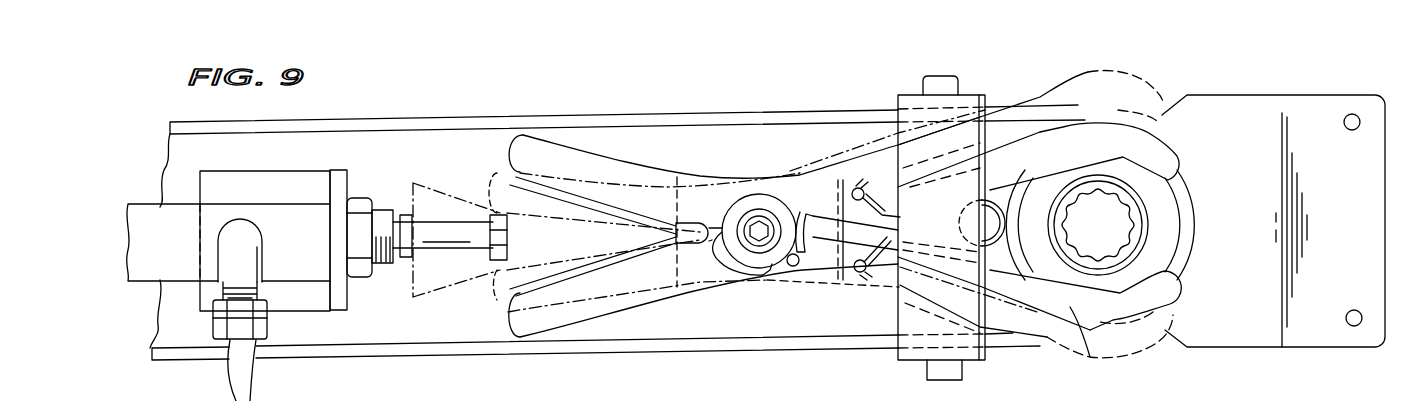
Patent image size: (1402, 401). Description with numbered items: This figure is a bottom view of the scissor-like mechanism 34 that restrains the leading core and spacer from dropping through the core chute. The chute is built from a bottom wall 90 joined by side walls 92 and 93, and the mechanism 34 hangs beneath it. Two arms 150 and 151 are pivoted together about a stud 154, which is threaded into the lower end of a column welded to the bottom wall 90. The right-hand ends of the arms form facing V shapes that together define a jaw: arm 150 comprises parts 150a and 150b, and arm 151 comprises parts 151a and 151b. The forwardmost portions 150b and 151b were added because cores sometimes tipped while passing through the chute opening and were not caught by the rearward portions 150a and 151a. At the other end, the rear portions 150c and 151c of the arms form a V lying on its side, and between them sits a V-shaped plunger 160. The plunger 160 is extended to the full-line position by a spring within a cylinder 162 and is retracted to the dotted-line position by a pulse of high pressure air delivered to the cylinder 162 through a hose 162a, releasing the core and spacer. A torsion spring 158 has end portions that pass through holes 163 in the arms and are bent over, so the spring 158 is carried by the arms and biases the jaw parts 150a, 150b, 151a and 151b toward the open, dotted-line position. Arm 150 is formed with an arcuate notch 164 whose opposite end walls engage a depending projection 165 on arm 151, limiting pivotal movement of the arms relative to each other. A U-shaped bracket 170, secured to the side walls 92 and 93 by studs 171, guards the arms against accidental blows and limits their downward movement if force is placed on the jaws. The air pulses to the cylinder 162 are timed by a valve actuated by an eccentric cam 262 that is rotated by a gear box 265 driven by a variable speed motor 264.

The scissor-like mechanism 34 is at (799, 324).
The bottom wall 90 is at (622, 133).
The side wall 92 is at (357, 358).
The side wall 93 is at (402, 122).
The arm 150 is at (663, 178).
The rearward V-shaped part of arm 150a is at (1098, 133).
The forwardmost V-shaped part of arm 150b is at (1160, 150).
The rear portion of arm 150c is at (532, 140).
The arm 151 is at (627, 295).
The rearward V-shaped part of arm 151a is at (1080, 308).
The forwardmost V-shaped part of arm 151b is at (1167, 292).
The rear portion of arm 151c is at (543, 327).
The stud 154 is at (757, 220).
The torsion spring 158 is at (888, 238).
The plunger 160 is at (607, 252).
The cylinder 162 is at (278, 178).
The hose 162a is at (232, 396).
The holes 163 is at (858, 188).
The arcuate notch 164 is at (768, 272).
The depending projection 165 is at (803, 212).
The U-shaped bracket 170 is at (920, 352).
The studs 171 is at (950, 76).
The eccentric cam 262 is at (1100, 285).
The variable speed motor 264 is at (1273, 248).
The gear box 265 is at (1238, 257).